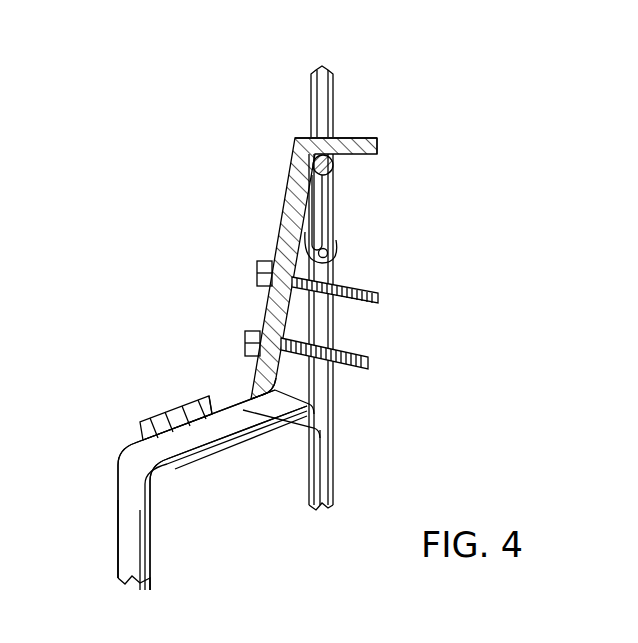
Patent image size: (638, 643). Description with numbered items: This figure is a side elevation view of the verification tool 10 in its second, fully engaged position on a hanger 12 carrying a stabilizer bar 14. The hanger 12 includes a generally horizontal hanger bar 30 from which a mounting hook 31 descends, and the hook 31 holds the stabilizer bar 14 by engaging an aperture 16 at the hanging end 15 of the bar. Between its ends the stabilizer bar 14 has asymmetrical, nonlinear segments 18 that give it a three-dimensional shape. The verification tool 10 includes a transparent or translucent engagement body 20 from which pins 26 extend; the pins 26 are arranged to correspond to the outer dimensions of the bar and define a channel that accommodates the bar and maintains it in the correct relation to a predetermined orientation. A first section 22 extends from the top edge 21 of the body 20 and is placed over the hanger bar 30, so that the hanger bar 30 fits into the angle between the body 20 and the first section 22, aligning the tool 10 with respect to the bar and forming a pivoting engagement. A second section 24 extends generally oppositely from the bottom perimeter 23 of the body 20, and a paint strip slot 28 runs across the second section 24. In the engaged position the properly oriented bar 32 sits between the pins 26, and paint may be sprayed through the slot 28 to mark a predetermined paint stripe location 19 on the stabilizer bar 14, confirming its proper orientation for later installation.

The verification tool 10 is at (262, 155).
The hanger 12 is at (334, 97).
The stabilizer bar 14 is at (105, 538).
The hanging end 15 is at (335, 325).
The aperture 16 is at (330, 261).
The nonlinear segment 18 is at (220, 457).
The paint stripe location 19 is at (238, 402).
The engagement body 20 is at (287, 204).
The top edge 21 is at (295, 137).
The first section 22 is at (336, 155).
The bottom perimeter 23 is at (255, 390).
The second section 24 is at (163, 417).
The pin 26 is at (380, 290).
The paint strip slot 28 is at (190, 388).
The hanger bar 30 is at (336, 169).
The mounting hook 31 is at (330, 215).
The properly oriented bar 32 is at (153, 548).